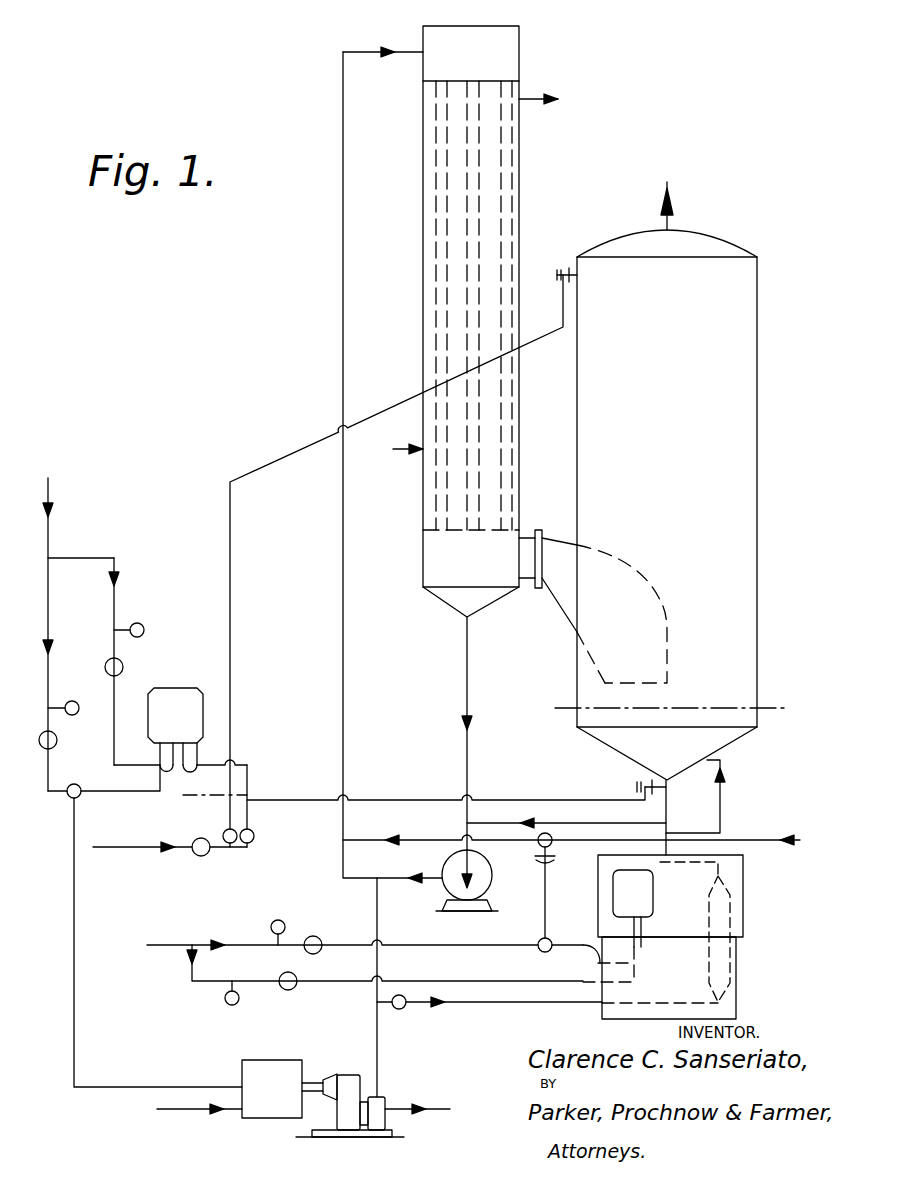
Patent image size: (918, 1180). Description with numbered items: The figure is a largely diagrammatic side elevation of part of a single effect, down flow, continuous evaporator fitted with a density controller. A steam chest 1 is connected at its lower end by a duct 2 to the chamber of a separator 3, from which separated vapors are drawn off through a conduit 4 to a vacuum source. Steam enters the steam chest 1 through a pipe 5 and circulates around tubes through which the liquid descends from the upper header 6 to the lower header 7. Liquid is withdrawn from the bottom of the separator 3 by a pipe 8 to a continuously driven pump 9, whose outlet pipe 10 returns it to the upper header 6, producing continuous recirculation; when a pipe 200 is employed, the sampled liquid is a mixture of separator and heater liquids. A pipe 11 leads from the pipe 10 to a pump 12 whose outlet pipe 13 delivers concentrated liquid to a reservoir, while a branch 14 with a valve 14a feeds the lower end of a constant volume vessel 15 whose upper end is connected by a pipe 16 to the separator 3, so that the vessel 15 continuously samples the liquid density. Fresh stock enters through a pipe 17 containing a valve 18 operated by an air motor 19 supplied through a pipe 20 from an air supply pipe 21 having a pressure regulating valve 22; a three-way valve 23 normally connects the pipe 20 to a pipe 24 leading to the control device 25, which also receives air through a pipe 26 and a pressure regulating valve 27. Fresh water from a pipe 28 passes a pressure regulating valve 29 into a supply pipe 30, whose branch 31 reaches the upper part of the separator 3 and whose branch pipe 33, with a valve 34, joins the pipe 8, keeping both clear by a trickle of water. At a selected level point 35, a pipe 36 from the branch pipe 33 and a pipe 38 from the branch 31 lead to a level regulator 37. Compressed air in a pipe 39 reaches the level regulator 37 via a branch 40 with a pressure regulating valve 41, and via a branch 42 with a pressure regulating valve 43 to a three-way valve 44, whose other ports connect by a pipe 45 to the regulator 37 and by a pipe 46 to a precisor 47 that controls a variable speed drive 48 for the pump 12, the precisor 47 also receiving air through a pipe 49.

The steam chest 1 is at (423, 212).
The duct 2 is at (540, 530).
The separator 3 is at (758, 452).
The conduit 4 is at (680, 222).
The pipe 5 is at (400, 449).
The upper header 6 is at (512, 44).
The lower header 7 is at (430, 550).
The pipe 8 is at (668, 792).
The pump 9 is at (490, 880).
The pipe 10 is at (420, 878).
The pipe 11 is at (379, 906).
The pump 12 is at (390, 1092).
The outlet pipe 13 is at (436, 1106).
The branch 14 is at (462, 1010).
The valve 14a is at (398, 1010).
The constant volume vessel 15 is at (732, 964).
The pipe 16 is at (724, 790).
The pipe 17 is at (790, 842).
The valve 18 is at (558, 843).
The air motor 19 is at (556, 862).
The pipe 20 is at (545, 906).
The air supply pipe 21 is at (440, 962).
The pressure regulating valve 22 is at (320, 937).
The 3-way valve 23 is at (548, 936).
The pipe 24 is at (645, 958).
The control device 25 is at (646, 898).
The pipe 26 is at (190, 976).
The pressure regulating valve 27 is at (282, 992).
The pipe 28 is at (120, 858).
The pressure regulating valve 29 is at (198, 858).
The supply pipe 30 is at (236, 852).
The branch 31 is at (545, 337).
The branch pipe 33 is at (556, 800).
The valve 34 is at (256, 848).
The level point 35 is at (250, 784).
The pipe 36 is at (256, 770).
The level regulator 37 is at (224, 836).
The pipe 38 is at (184, 796).
The pipe 39 is at (48, 480).
The branch 40 is at (110, 556).
The pressure regulating valve 41 is at (104, 658).
The branch 42 is at (50, 592).
The pressure regulating valve 43 is at (58, 740).
The 3-way valve 44 is at (82, 786).
The pipe 45 is at (104, 792).
The pipe 46 is at (72, 940).
The precisor 47 is at (290, 1090).
The variable speed drive 48 is at (358, 1074).
The pipe 49 is at (160, 1102).
The pipe 200 is at (466, 682).